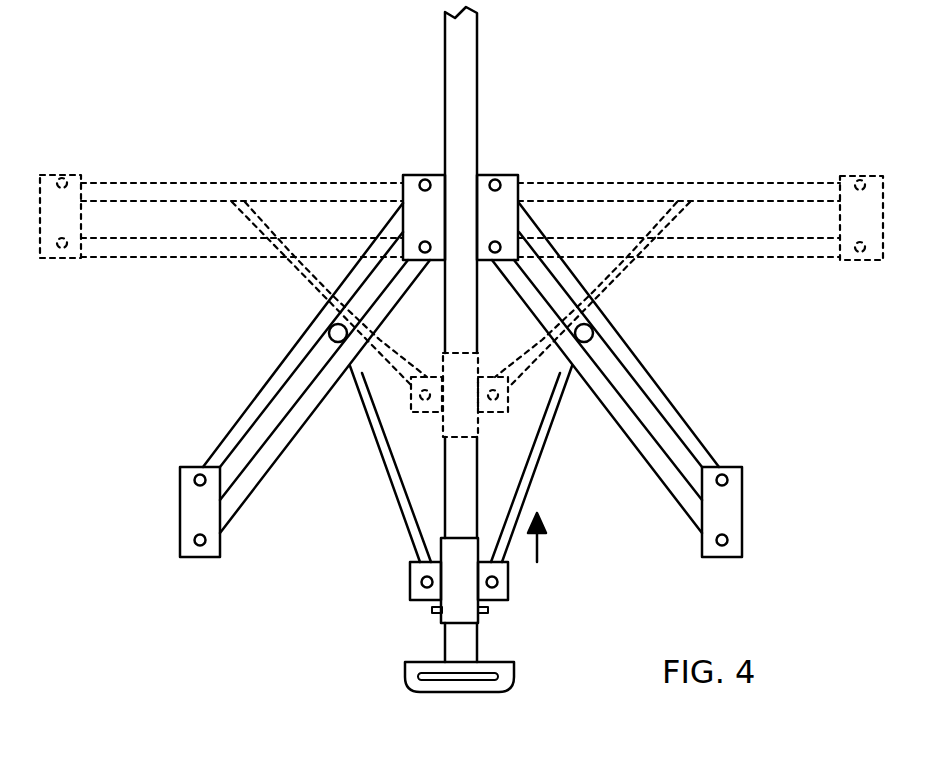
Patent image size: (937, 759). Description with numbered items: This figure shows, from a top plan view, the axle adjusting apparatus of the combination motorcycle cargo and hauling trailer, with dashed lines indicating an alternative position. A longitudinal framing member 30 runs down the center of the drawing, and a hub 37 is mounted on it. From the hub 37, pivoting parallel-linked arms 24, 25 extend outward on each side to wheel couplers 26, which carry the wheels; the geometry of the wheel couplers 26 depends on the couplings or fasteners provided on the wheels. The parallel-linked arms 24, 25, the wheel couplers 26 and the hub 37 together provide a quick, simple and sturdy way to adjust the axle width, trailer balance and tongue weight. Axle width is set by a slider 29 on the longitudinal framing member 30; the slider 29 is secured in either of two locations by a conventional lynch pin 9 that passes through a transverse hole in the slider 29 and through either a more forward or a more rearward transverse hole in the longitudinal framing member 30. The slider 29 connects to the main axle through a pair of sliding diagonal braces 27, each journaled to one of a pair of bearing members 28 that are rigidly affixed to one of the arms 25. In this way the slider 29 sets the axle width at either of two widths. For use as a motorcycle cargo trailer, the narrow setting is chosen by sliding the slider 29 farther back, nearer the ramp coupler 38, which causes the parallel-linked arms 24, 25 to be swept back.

The longitudinal framing member 30 is at (452, 112).
The hub 37 is at (508, 185).
The parallel-linked arm 25 is at (256, 407).
The parallel-linked arm 24 is at (245, 493).
The bearing member 28 is at (333, 328).
The sliding diagonal brace 27 is at (384, 467).
The wheel coupler 26 is at (186, 520).
The lynch pin 9 is at (433, 609).
The slider 29 is at (486, 612).
The ramp coupler 38 is at (410, 670).